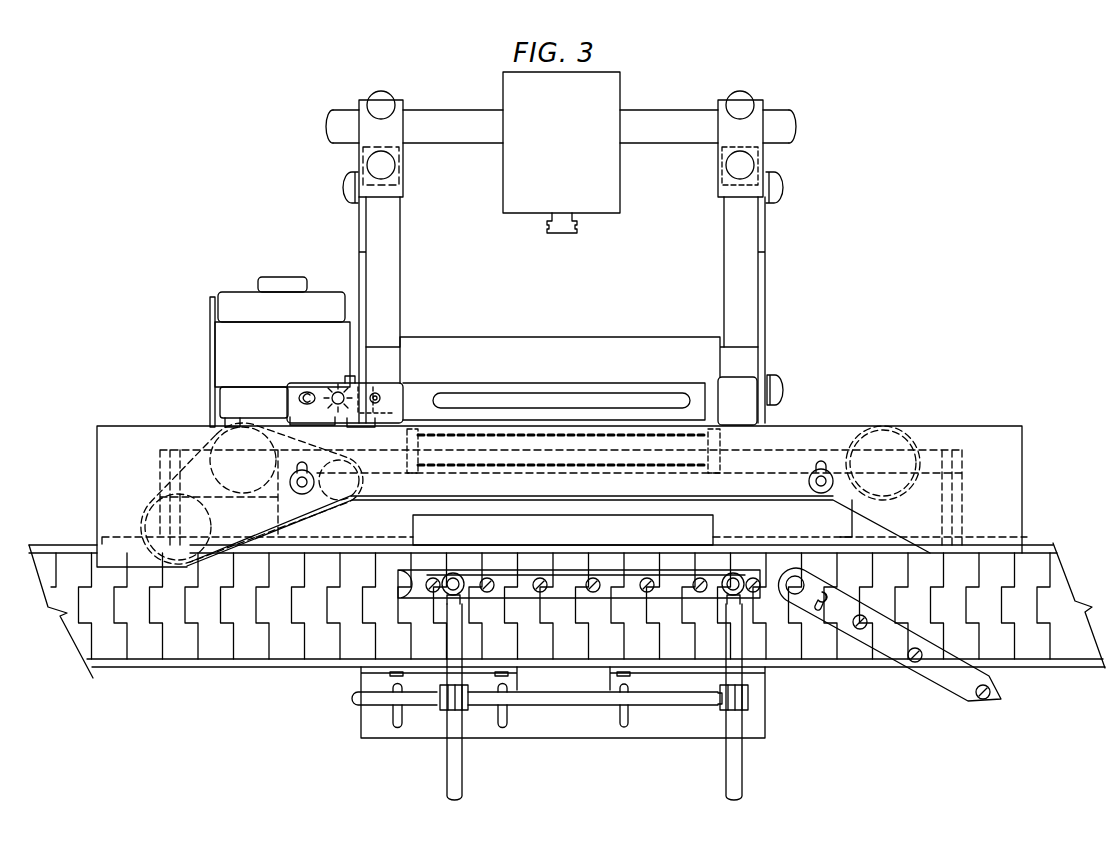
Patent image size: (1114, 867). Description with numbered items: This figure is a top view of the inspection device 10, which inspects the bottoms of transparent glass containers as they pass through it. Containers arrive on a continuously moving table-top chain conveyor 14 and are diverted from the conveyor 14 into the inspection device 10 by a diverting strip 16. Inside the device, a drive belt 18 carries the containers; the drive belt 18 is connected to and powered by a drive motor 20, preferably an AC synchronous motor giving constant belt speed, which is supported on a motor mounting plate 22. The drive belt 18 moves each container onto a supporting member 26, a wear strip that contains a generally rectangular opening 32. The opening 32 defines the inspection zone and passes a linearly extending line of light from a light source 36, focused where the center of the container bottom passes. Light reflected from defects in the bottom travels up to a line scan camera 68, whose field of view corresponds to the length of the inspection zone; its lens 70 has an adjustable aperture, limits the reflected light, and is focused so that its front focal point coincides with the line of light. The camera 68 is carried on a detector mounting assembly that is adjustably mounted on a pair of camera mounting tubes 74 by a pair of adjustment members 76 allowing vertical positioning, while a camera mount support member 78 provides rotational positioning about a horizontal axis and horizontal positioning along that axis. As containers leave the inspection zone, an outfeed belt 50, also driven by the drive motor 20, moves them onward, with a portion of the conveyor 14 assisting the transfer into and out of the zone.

The inspection device 10 is at (903, 176).
The conveyor 14 is at (1060, 648).
The diverting strip 16 is at (933, 684).
The drive belt 18 is at (870, 513).
The drive motor 20 is at (233, 290).
The motor mounting plate 22 is at (210, 308).
The supporting member 26 is at (811, 531).
The rectangular opening 32 is at (713, 520).
The light source 36 is at (720, 440).
The outfeed belt 50 is at (202, 559).
The line scan camera 68 is at (620, 185).
The lens 70 is at (556, 233).
The camera mounting tubes 74 is at (400, 253).
The adjustment members 76 is at (362, 155).
The camera mount support member 78 is at (652, 110).